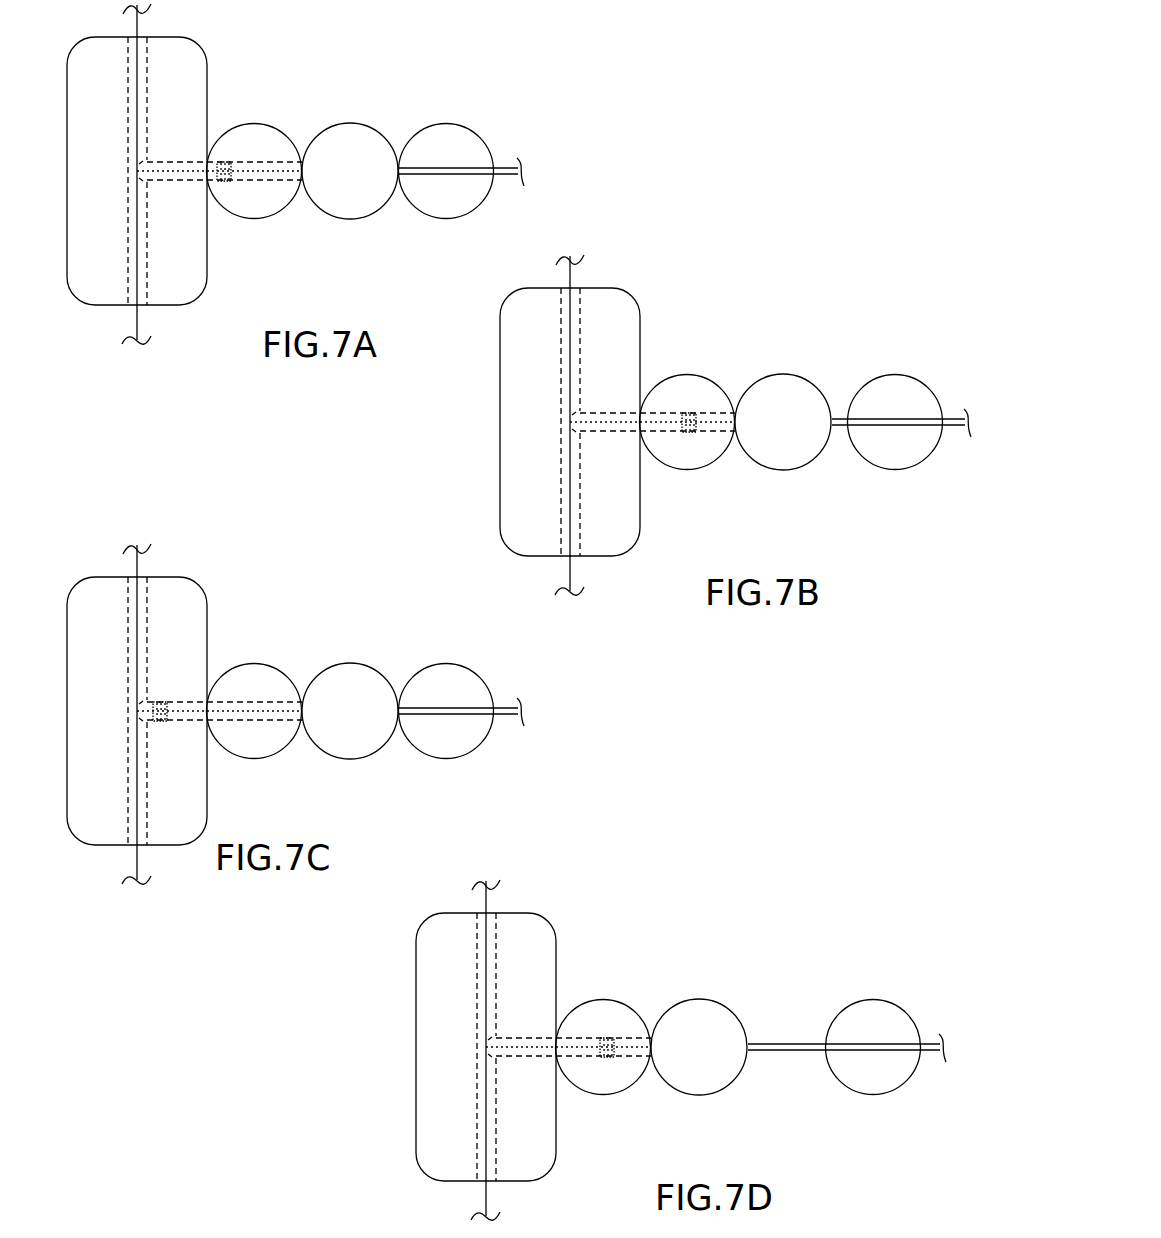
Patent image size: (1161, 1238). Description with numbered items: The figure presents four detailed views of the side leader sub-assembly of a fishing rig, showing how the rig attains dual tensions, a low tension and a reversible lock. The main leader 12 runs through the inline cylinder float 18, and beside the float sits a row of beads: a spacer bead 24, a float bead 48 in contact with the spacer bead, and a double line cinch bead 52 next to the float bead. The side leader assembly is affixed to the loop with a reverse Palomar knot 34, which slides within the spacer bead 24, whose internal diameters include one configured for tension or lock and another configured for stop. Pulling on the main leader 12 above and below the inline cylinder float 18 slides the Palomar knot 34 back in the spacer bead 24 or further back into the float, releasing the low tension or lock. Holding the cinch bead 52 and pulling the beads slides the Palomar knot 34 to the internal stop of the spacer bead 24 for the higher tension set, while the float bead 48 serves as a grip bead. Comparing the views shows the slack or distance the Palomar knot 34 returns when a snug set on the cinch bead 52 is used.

In FIG. 7A, the main leader 12 is at (137, 22).
In FIG. 7B, the main leader 12 is at (570, 277).
In FIG. 7C, the main leader 12 is at (137, 562).
In FIG. 7D, the main leader 12 is at (485, 896).
In FIG. 7A, the inline cylinder float 18 is at (100, 292).
In FIG. 7B, the inline cylinder float 18 is at (623, 317).
In FIG. 7C, the inline cylinder float 18 is at (187, 592).
In FIG. 7D, the inline cylinder float 18 is at (430, 1127).
In FIG. 7A, the spacer bead 24 is at (249, 140).
In FIG. 7B, the spacer bead 24 is at (682, 390).
In FIG. 7C, the spacer bead 24 is at (248, 678).
In FIG. 7D, the spacer bead 24 is at (598, 1015).
In FIG. 7A, the reverse Palomar knot 34 is at (223, 187).
In FIG. 7B, the reverse Palomar knot 34 is at (688, 435).
In FIG. 7C, the reverse Palomar knot 34 is at (160, 725).
In FIG. 7D, the reverse Palomar knot 34 is at (607, 1062).
In FIG. 7A, the float bead 48 is at (340, 208).
In FIG. 7B, the float bead 48 is at (797, 452).
In FIG. 7C, the float bead 48 is at (357, 752).
In FIG. 7D, the float bead 48 is at (727, 1075).
In FIG. 7A, the double line cinch bead 52 is at (467, 126).
In FIG. 7B, the double line cinch bead 52 is at (893, 374).
In FIG. 7C, the double line cinch bead 52 is at (422, 662).
In FIG. 7D, the double line cinch bead 52 is at (858, 1000).